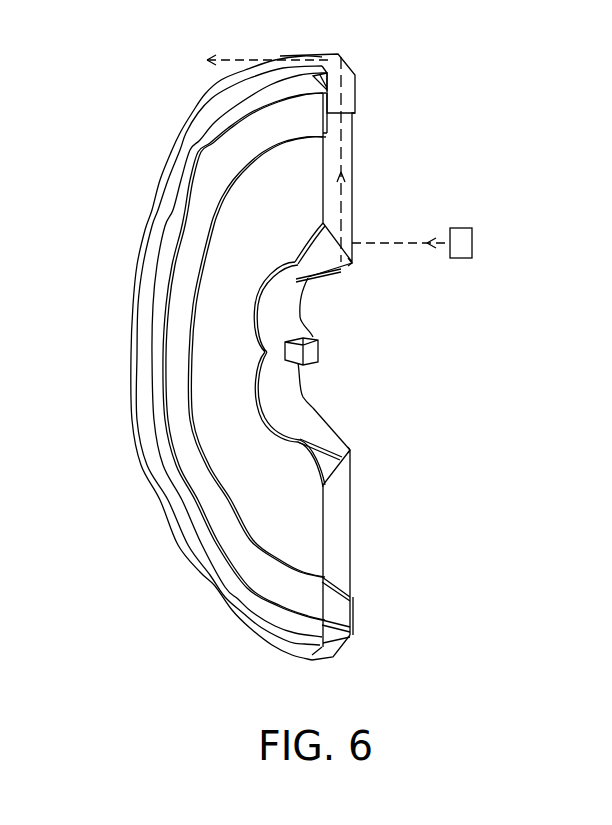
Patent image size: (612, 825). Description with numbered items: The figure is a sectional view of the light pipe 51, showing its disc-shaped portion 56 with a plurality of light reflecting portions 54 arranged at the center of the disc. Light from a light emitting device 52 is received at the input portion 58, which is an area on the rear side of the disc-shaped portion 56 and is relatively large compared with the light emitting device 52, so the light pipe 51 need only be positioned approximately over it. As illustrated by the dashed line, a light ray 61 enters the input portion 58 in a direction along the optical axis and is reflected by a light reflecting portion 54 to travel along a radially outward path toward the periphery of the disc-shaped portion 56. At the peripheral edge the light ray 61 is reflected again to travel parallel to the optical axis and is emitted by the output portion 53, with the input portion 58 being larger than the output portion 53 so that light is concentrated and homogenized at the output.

The light pipe 51 is at (128, 88).
The light emitting device 52 is at (472, 243).
The output portion 53 is at (290, 56).
The light reflecting portion 54 is at (322, 455).
The disc-shaped portion 56 is at (333, 540).
The input portion 58 is at (362, 257).
The light ray 61 is at (346, 150).